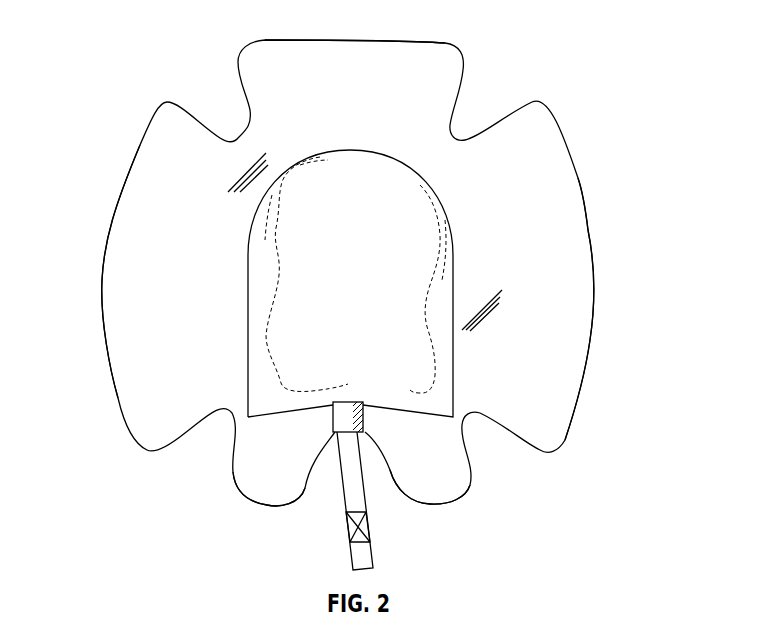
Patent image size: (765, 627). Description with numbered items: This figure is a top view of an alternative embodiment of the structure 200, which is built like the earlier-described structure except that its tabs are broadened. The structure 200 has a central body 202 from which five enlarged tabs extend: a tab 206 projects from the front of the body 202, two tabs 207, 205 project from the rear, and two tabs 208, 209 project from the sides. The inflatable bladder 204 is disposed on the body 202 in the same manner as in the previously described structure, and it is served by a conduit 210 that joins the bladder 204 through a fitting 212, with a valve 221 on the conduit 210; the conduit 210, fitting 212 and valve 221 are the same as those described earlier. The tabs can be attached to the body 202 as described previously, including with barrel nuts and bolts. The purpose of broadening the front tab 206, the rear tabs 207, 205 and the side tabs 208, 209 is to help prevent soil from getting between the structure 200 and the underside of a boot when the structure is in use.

The structure 200 is at (143, 81).
The body 202 is at (578, 178).
The inflatable bladder 204 is at (455, 262).
The rear tab 205 is at (448, 502).
The front tab 206 is at (397, 40).
The rear tab 207 is at (248, 505).
The side tab 208 is at (593, 280).
The side tab 209 is at (103, 278).
The conduit 210 is at (343, 492).
The fitting 212 is at (332, 418).
The valve 221 is at (368, 528).